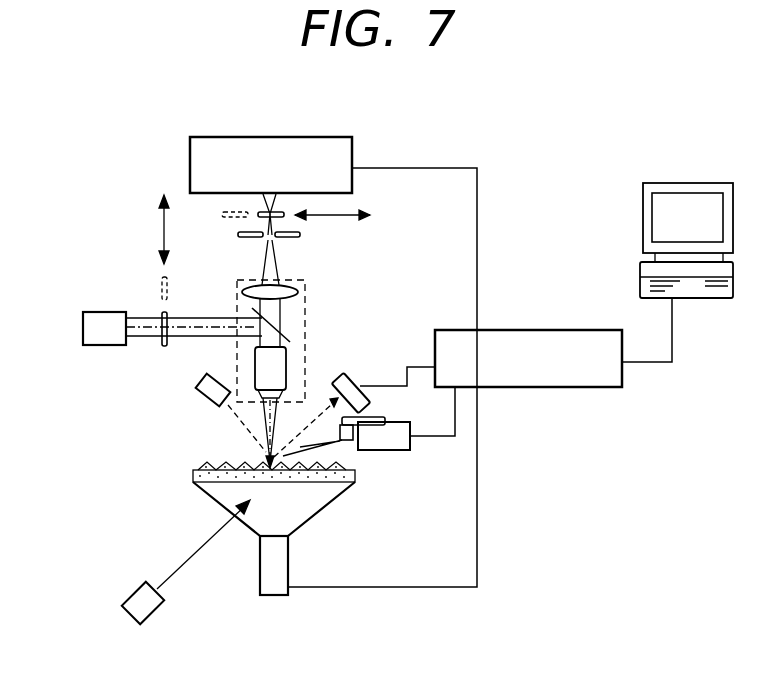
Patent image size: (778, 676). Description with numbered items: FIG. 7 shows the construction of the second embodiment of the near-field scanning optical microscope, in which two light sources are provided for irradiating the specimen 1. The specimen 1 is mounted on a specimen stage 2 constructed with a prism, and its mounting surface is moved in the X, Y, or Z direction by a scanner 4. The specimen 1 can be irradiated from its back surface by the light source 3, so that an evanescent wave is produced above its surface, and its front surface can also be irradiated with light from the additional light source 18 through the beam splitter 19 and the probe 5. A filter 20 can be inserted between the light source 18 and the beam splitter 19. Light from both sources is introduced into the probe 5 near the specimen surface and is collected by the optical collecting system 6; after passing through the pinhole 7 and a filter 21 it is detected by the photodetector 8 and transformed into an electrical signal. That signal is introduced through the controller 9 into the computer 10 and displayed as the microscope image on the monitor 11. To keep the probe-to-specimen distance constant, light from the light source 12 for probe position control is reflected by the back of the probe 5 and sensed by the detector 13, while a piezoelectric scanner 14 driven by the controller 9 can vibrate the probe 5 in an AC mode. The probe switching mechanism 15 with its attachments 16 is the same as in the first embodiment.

The specimen 1 is at (205, 470).
The specimen stage 2 is at (205, 492).
The light source 3 is at (132, 594).
The scanner 4 is at (266, 576).
The probe 5 is at (325, 445).
The optical collecting system 6 is at (306, 310).
The pinhole 7 is at (300, 235).
The photodetector 8 is at (256, 137).
The controller 9 is at (528, 330).
The computer 10 is at (720, 298).
The monitor 11 is at (690, 183).
The light source for probe position control 12 is at (200, 397).
The detector for probe position control 13 is at (346, 375).
The piezoelectric scanner for the probe 14 is at (350, 444).
The probe switching mechanism 15 is at (402, 446).
The attachments 16 is at (372, 418).
The additional light source 18 is at (83, 329).
The beam splitter 19 is at (252, 316).
The filter 20 is at (160, 318).
The filter 21 is at (258, 215).